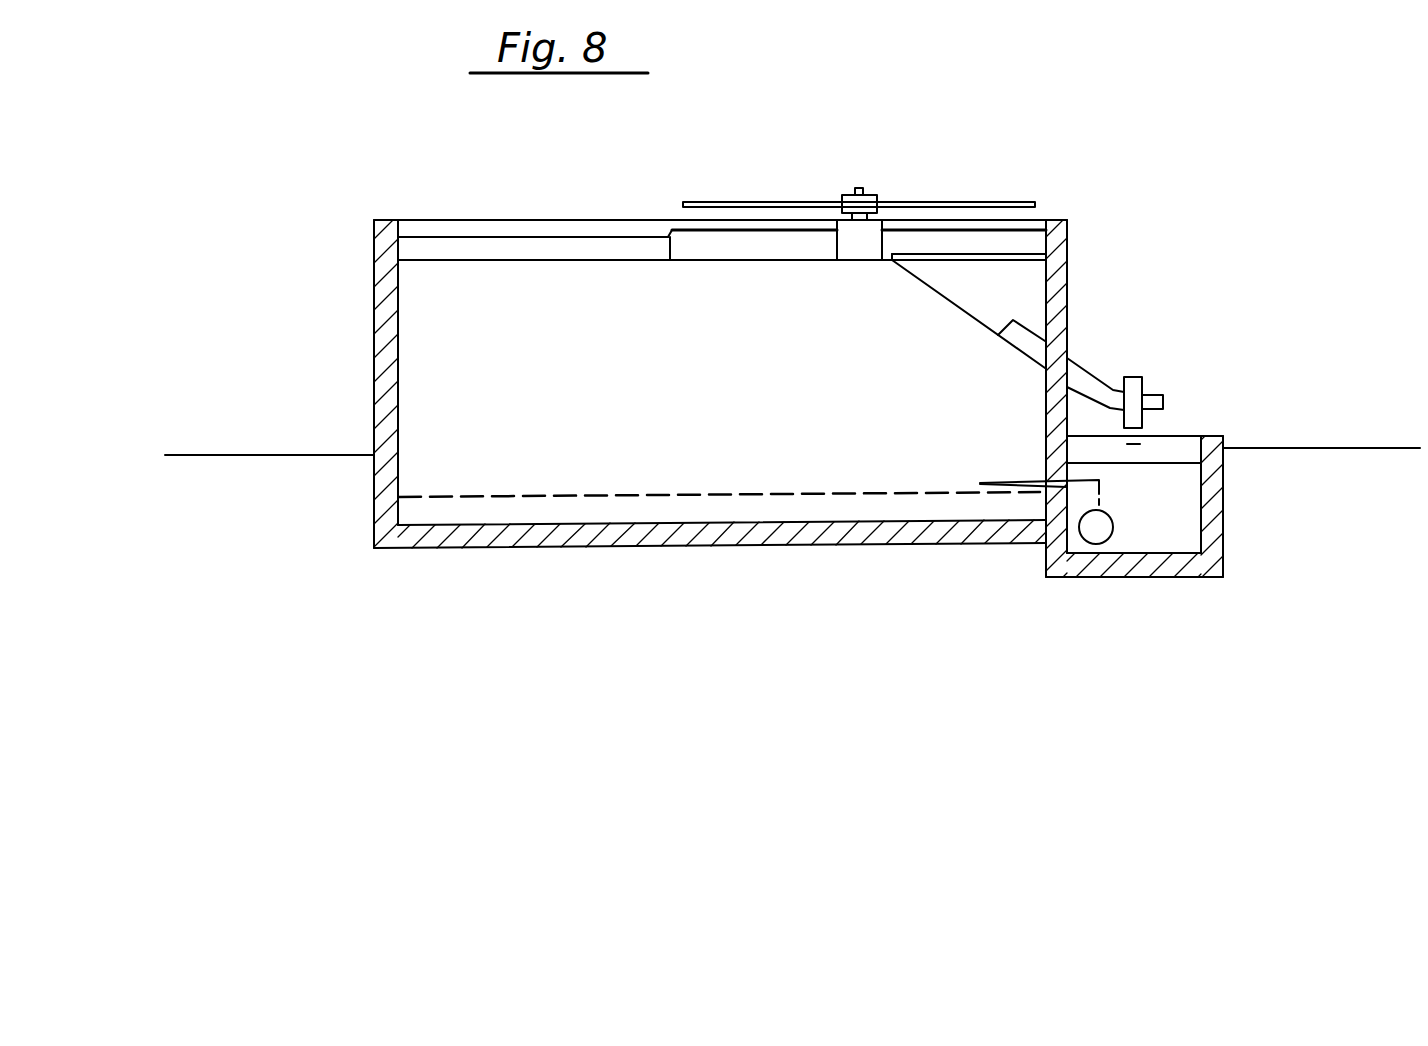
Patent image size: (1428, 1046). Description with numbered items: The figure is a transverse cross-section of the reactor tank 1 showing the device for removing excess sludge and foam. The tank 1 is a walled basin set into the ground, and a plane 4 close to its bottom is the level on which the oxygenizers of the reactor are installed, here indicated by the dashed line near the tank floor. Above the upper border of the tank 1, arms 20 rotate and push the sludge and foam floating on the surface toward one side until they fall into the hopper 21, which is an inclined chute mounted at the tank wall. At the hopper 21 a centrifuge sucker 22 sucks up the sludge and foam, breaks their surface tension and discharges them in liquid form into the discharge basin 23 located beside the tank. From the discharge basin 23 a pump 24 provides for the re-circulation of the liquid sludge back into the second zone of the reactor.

The tank 1 is at (387, 377).
The plane 4 is at (719, 635).
The arms 20 is at (936, 201).
The hopper 21 is at (995, 280).
The centrifuge sucker 22 is at (1138, 382).
The discharge basin 23 is at (1194, 457).
The pump 24 is at (1049, 633).